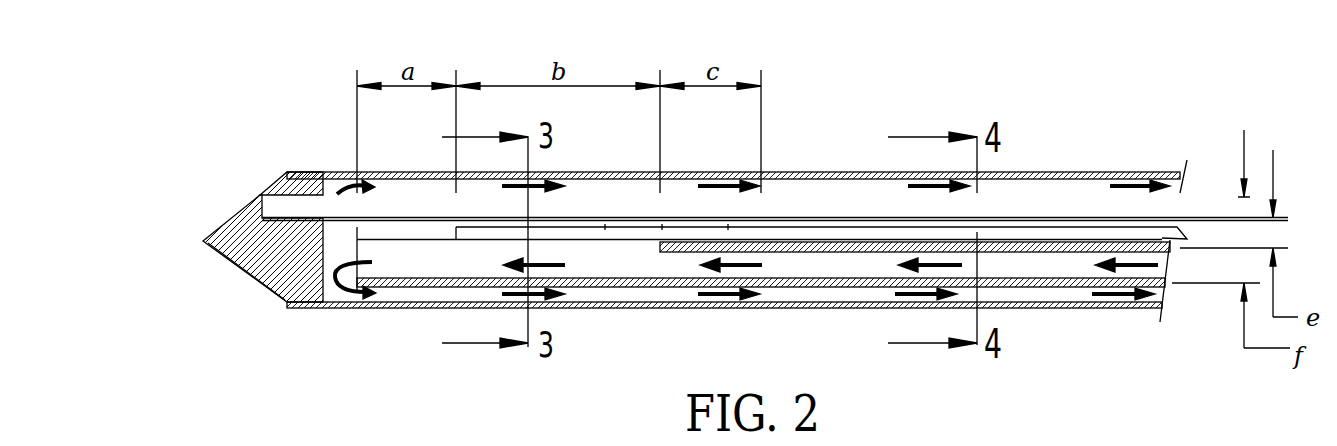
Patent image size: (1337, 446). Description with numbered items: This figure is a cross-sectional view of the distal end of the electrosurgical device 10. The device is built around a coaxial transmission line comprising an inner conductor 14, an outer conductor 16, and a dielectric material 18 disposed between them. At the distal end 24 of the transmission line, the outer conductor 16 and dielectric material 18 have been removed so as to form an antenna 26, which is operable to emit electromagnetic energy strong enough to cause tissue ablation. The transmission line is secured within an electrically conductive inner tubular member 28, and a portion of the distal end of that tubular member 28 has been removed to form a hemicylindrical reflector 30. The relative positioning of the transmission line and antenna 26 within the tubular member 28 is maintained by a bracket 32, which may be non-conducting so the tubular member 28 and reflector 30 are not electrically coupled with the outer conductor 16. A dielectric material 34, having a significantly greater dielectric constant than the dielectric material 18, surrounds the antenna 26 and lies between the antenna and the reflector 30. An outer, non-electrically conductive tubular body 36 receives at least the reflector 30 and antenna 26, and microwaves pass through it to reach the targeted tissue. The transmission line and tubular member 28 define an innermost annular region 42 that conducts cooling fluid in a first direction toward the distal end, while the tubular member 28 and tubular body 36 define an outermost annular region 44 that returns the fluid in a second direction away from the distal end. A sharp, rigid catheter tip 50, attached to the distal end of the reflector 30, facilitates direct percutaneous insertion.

The electrosurgical device 10 is at (292, 99).
The inner conductor 14 is at (722, 193).
The outer conductor 16 is at (827, 247).
The dielectric material 18 is at (780, 242).
The distal end 24 is at (470, 263).
The antenna 26 is at (617, 193).
The inner tubular member 28 is at (1042, 285).
The hemicylindrical reflector 30 is at (392, 285).
The bracket 32 is at (877, 193).
The dielectric material 34 is at (568, 193).
The tubular body 36 is at (1022, 175).
The innermost annular region 42 is at (870, 265).
The outermost annular region 44 is at (1085, 293).
The catheter tip 50 is at (247, 207).